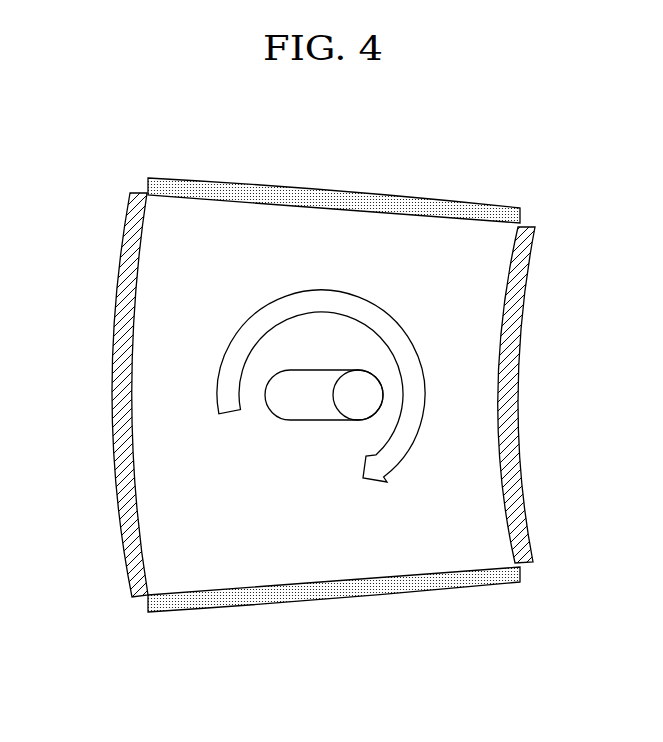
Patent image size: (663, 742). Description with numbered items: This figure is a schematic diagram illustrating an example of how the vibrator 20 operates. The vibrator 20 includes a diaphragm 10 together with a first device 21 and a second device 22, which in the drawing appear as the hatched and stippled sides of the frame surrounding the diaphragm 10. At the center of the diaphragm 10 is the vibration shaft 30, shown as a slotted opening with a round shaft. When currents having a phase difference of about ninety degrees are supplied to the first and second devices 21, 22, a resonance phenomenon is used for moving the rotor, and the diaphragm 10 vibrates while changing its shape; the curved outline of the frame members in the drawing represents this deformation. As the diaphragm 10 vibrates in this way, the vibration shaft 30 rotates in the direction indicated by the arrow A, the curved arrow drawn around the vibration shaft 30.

The diaphragm 10 is at (230, 540).
The vibrator 20 is at (294, 356).
The first device 21 is at (301, 375).
The second device 22 is at (180, 182).
The vibration shaft 30 is at (288, 426).
The arrow A is at (418, 435).